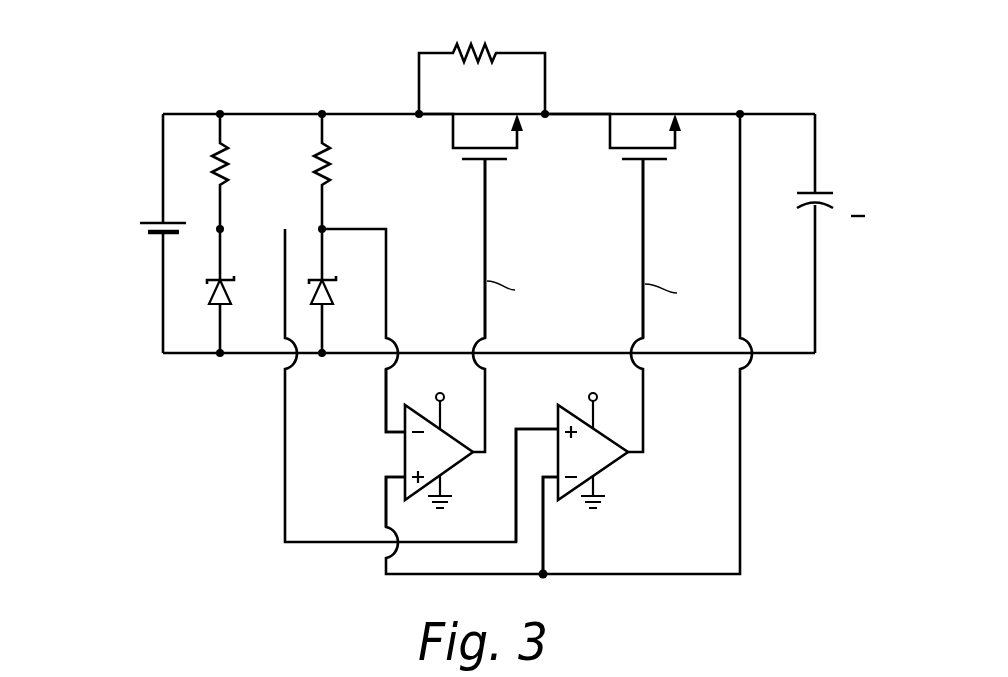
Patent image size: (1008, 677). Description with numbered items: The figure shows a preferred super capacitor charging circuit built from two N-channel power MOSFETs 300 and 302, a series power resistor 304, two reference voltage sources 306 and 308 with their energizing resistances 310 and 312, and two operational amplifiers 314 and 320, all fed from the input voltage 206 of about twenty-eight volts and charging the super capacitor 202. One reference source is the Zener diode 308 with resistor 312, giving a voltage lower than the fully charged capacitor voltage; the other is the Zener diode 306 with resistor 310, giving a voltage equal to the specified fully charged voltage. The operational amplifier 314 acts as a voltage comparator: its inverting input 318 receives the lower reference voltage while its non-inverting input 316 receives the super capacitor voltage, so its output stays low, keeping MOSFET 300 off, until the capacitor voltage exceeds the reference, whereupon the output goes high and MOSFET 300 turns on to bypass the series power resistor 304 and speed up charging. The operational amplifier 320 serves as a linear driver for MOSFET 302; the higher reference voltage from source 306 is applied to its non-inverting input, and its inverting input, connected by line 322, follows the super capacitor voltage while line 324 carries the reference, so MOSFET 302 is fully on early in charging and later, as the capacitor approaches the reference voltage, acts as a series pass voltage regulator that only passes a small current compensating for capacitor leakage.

The super capacitor 202 is at (828, 207).
The input voltage 206 is at (159, 235).
The power MOSFET Q1 300 is at (493, 162).
The power MOSFET Q2 302 is at (652, 163).
The series power resistor 304 is at (490, 53).
The reference voltage source 306 is at (212, 305).
The reference voltage source 308 is at (313, 306).
The resistor R2 310 is at (214, 155).
The resistor R1 312 is at (316, 155).
The operational amplifier A1 314 is at (413, 500).
The non-inverting input 316 is at (402, 477).
The inverting input 318 is at (393, 433).
The operational amplifier A2 320 is at (570, 495).
The inverting input line of amplifier A2 322 is at (548, 473).
The non-inverting input line of amplifier A2 324 is at (537, 426).